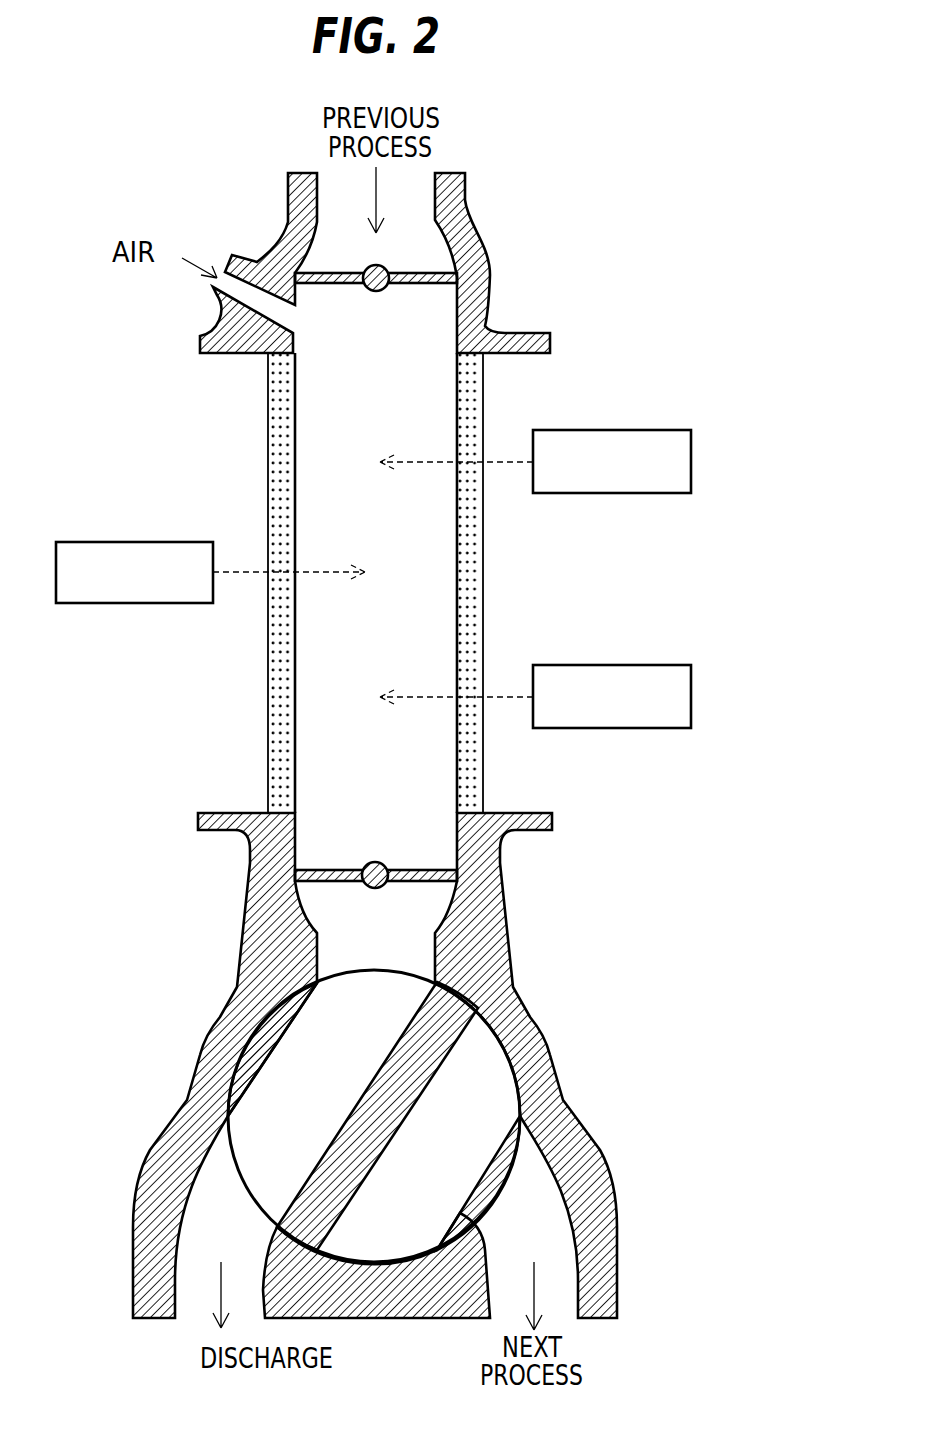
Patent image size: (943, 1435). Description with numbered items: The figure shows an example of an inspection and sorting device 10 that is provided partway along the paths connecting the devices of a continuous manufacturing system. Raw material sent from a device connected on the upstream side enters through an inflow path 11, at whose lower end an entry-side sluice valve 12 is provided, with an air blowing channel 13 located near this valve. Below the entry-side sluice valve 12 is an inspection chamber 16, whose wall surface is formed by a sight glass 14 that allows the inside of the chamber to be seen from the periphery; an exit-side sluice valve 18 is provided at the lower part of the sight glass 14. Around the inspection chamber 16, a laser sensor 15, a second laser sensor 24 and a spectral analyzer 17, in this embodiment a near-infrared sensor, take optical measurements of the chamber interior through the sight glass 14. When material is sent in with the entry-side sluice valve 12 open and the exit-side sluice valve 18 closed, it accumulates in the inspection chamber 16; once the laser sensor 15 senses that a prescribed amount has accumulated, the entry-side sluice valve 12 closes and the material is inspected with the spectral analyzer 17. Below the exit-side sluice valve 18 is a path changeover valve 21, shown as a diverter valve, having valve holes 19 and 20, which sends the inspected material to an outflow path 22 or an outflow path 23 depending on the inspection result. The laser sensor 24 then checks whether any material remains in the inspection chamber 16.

The inspection and sorting device 10 is at (616, 229).
The inflow path 11 is at (410, 197).
The entry-side sluice valve 12 is at (432, 273).
The air blowing channel 13 is at (212, 310).
The sight glass 14 is at (485, 384).
The laser sensor 15 is at (670, 430).
The inspection chamber 16 is at (437, 562).
The spectral analyzer 17 is at (670, 665).
The exit-side sluice valve 18 is at (430, 882).
The valve hole 19 is at (372, 1022).
The valve hole 20 is at (478, 1098).
The path changeover valve 21 is at (503, 1181).
The outflow path 22 is at (552, 1245).
The outflow path 23 is at (203, 1237).
The laser sensor 24 is at (78, 542).